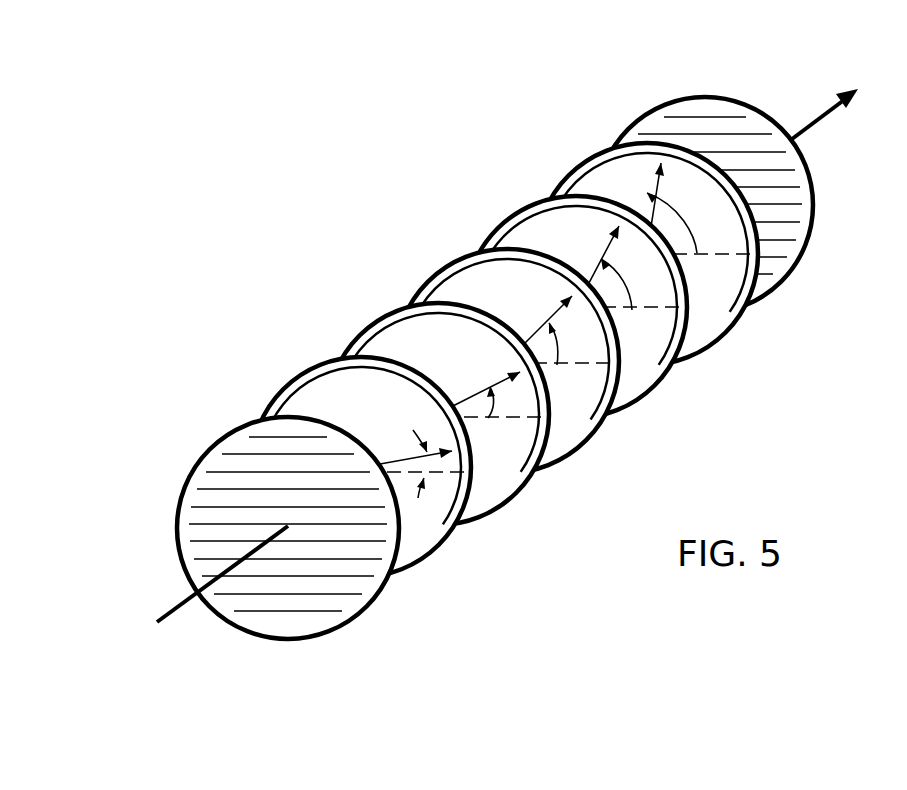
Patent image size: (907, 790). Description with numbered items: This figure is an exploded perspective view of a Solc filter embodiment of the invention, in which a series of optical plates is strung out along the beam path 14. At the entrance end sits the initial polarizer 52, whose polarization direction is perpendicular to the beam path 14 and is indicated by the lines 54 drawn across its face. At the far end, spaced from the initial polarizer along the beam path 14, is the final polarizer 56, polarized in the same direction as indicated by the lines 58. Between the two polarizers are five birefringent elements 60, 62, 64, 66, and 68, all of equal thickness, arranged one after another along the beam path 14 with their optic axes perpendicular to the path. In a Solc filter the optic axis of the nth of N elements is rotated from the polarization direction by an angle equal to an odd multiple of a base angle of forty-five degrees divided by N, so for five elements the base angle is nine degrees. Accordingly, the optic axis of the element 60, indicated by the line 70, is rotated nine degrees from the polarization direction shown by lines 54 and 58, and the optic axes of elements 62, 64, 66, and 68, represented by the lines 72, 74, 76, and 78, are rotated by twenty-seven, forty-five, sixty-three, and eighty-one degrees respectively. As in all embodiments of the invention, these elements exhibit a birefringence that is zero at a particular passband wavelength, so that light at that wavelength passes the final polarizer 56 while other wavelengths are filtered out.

The beam path 14 is at (183, 608).
The initial polarizer 52 is at (210, 427).
The lines 54 is at (208, 488).
The final polarizer 56 is at (633, 113).
The lines 58 is at (777, 218).
The birefringent element 60 is at (293, 378).
The birefringent element 62 is at (366, 325).
The birefringent element 64 is at (407, 305).
The birefringent element 66 is at (480, 253).
The birefringent element 68 is at (557, 200).
The line 70 is at (410, 473).
The line 72 is at (490, 420).
The line 74 is at (560, 366).
The line 76 is at (630, 312).
The line 78 is at (613, 172).